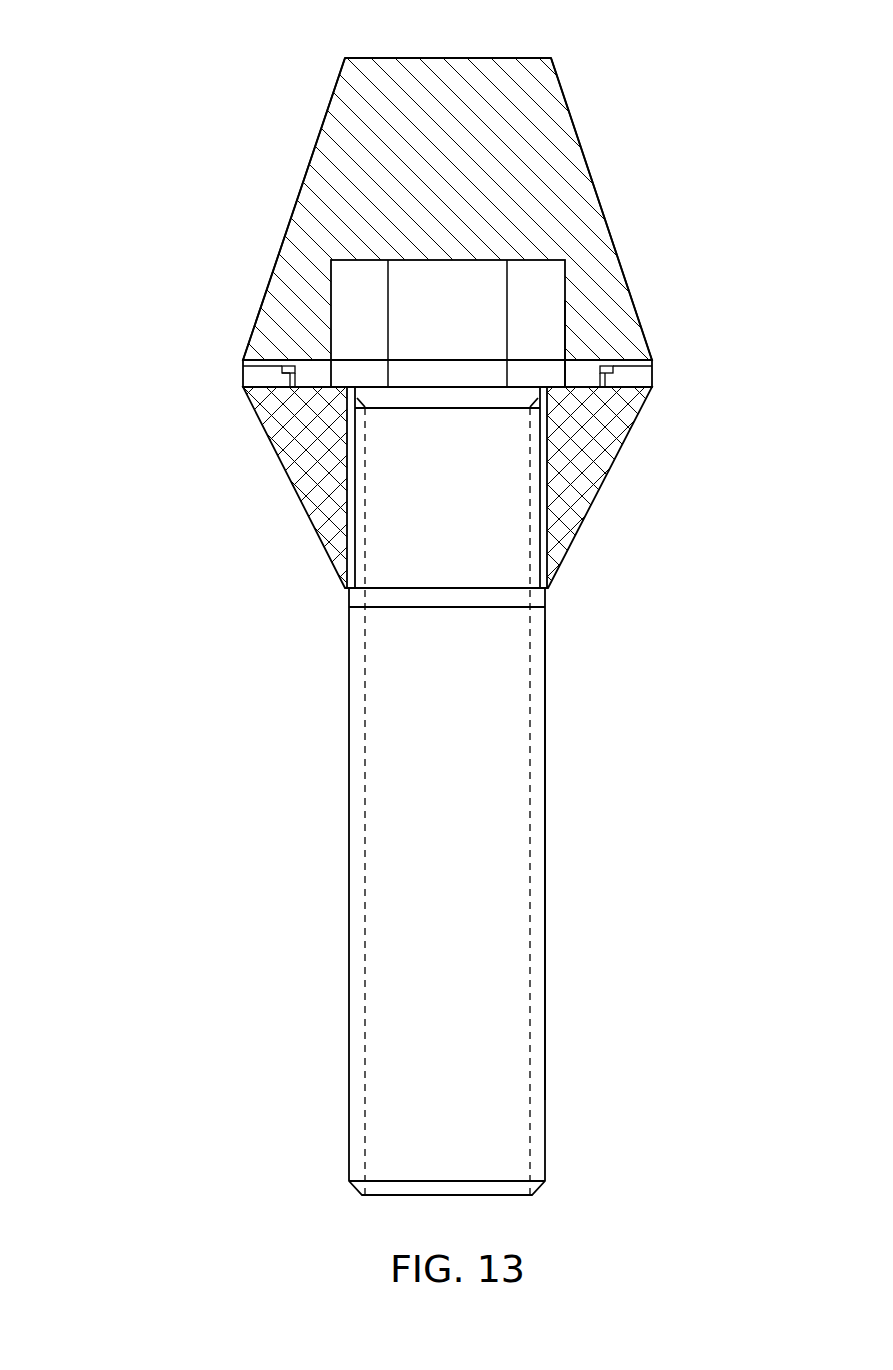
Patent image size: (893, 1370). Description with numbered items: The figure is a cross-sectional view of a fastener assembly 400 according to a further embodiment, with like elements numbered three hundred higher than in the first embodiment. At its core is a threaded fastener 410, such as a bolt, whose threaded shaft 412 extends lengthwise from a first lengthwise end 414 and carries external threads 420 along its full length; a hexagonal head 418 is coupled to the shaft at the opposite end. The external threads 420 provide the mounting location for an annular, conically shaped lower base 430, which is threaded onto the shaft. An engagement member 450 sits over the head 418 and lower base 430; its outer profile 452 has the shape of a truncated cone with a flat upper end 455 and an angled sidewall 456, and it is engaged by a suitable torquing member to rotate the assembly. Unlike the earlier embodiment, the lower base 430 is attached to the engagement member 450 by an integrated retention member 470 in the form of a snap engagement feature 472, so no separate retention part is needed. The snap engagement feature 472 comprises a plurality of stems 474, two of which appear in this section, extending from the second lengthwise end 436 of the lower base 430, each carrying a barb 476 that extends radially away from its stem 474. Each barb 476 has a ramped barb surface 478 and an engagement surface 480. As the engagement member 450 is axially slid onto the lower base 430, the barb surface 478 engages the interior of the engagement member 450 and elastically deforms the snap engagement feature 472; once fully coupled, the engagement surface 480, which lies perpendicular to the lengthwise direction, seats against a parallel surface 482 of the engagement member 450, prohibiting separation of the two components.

The fastener assembly 400 is at (130, 769).
The threaded fastener 410 is at (502, 1007).
The threaded shaft 412 is at (546, 818).
The first lengthwise end 414 is at (475, 1196).
The head 418 is at (545, 292).
The external threads 420 is at (360, 1092).
The lower base 430 is at (608, 478).
The second lengthwise end 436 is at (582, 372).
The engagement member 450 is at (585, 200).
The outer profile 452 is at (578, 143).
The flat upper end 455 is at (518, 58).
The angled sidewall 456 is at (300, 183).
The retention member 470 is at (238, 370).
The snap engagement feature 472 is at (293, 388).
The stem 474 is at (288, 378).
The barb 476 is at (290, 365).
The barb surface 478 is at (613, 367).
The engagement surface 480 is at (647, 400).
The parallel surface 482 is at (246, 359).